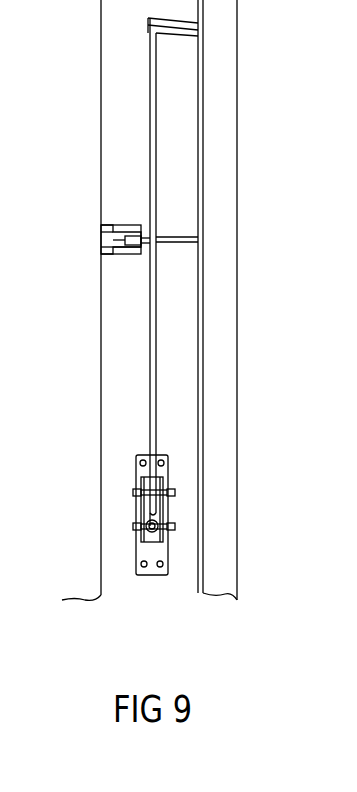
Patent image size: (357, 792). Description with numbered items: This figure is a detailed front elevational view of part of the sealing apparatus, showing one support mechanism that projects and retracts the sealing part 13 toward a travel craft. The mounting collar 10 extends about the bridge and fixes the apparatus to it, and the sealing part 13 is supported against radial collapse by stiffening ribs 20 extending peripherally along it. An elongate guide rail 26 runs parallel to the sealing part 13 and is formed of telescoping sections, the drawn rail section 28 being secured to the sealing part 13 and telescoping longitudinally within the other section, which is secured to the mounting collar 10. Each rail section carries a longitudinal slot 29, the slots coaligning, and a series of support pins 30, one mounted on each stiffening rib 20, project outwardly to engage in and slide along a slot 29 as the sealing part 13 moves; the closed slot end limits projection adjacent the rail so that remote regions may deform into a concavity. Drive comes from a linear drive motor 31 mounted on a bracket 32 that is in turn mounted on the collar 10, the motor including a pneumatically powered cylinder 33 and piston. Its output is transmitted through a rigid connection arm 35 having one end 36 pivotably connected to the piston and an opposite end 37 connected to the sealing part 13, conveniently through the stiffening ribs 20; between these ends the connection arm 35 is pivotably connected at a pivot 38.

The mounting collar 10 is at (115, 370).
The sealing part 13 is at (230, 384).
The stiffening ribs 20 is at (203, 347).
The guide rail 26 is at (92, 222).
The rail section 28 is at (131, 248).
The longitudinal slot 29 is at (103, 240).
The support pins 30 is at (128, 236).
The linear drive motor 31 is at (165, 537).
The bracket 32 is at (142, 512).
The pneumatically powered cylinder 33 is at (150, 538).
The rigid connection arm 35 is at (153, 167).
The end of connection arm 36 is at (154, 508).
The opposite end of connection arm 37 is at (150, 58).
The pivot 38 is at (175, 496).